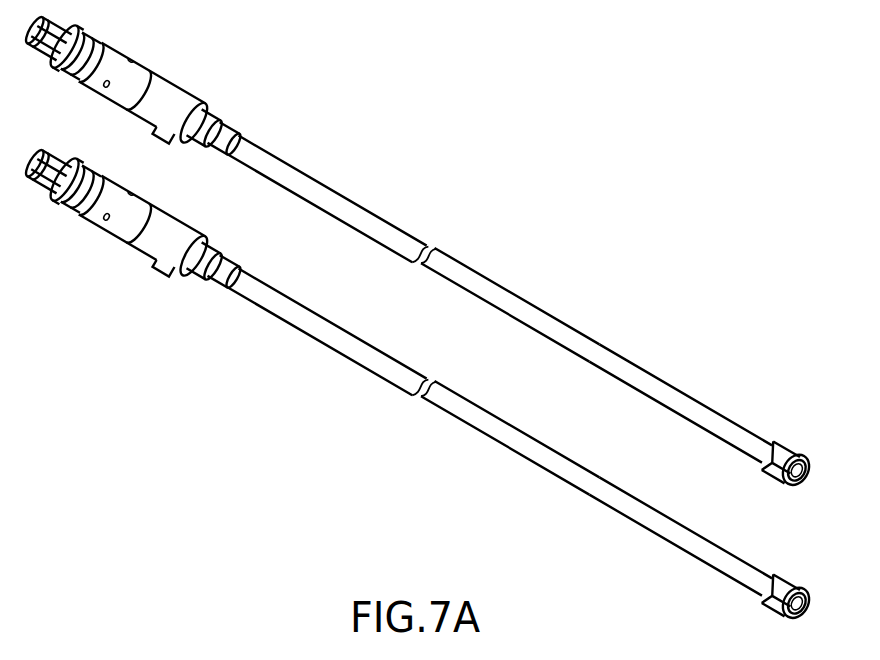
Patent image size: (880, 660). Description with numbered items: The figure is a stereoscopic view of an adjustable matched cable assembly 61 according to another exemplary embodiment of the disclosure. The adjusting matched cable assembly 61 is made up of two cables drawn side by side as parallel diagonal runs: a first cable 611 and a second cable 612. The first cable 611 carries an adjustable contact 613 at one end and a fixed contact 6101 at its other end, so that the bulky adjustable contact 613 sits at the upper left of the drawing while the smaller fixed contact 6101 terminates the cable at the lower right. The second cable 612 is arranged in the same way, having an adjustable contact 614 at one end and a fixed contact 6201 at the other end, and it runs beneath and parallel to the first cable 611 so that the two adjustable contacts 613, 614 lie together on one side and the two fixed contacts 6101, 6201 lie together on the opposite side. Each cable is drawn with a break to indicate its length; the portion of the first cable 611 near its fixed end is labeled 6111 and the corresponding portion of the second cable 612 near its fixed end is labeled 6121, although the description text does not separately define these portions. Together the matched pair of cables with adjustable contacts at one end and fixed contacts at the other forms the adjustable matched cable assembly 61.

The adjusting matched cable assembly 61 is at (760, 68).
The first cable 611 is at (528, 252).
The first cable end portion 6111 is at (638, 378).
The fixed contact 6101 is at (780, 452).
The second cable 612 is at (469, 463).
The second cable end portion 6121 is at (693, 545).
The fixed contact 6201 is at (780, 587).
The adjustable contact 613 is at (142, 73).
The adjustable contact 614 is at (122, 235).